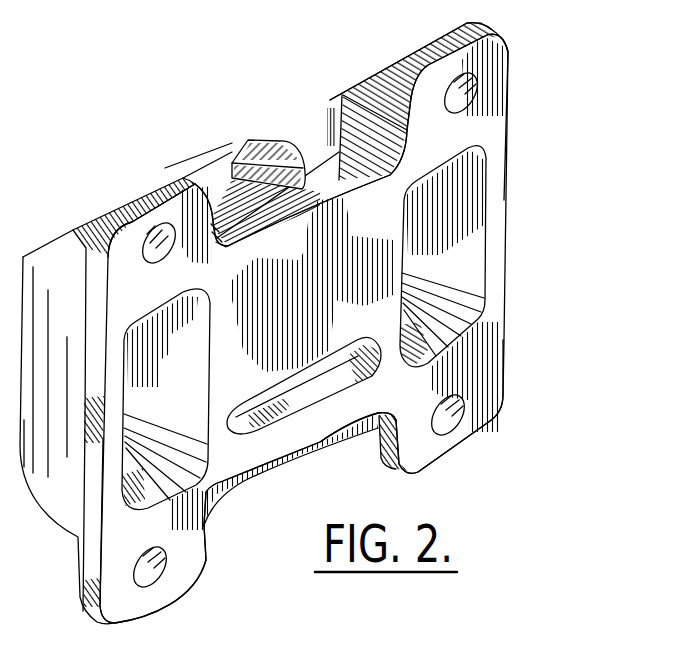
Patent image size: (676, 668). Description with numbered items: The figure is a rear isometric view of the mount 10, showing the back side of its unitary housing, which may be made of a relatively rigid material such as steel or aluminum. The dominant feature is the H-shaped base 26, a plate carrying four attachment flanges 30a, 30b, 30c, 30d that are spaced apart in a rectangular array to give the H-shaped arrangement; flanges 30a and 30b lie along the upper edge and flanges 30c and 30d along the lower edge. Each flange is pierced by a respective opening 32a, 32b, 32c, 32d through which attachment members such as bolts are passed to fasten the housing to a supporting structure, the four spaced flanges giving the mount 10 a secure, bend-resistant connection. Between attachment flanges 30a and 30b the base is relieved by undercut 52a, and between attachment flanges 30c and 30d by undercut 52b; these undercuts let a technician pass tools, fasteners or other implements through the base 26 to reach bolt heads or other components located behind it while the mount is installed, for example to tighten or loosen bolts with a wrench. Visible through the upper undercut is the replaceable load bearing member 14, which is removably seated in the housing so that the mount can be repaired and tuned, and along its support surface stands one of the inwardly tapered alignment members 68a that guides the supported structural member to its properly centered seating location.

The mount 10 is at (580, 112).
The replaceable load bearing member 14 is at (200, 139).
The H-shaped base 26 is at (499, 238).
The attachment flange 30a is at (127, 237).
The attachment flange 30b is at (497, 44).
The attachment flange 30c is at (123, 607).
The attachment flange 30d is at (452, 417).
The opening 32a is at (154, 258).
The opening 32b is at (464, 97).
The opening 32c is at (150, 577).
The opening 32d is at (483, 418).
The undercut 52a is at (338, 176).
The undercut 52b is at (381, 432).
The alignment member 68a is at (283, 133).